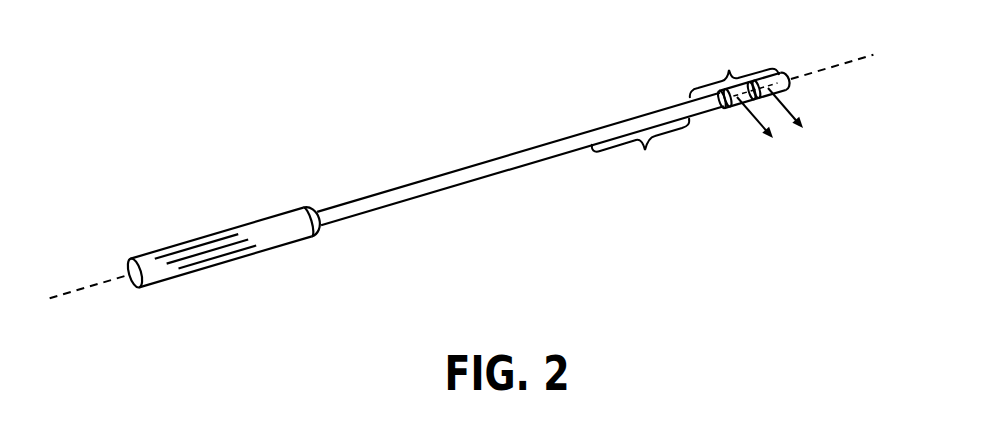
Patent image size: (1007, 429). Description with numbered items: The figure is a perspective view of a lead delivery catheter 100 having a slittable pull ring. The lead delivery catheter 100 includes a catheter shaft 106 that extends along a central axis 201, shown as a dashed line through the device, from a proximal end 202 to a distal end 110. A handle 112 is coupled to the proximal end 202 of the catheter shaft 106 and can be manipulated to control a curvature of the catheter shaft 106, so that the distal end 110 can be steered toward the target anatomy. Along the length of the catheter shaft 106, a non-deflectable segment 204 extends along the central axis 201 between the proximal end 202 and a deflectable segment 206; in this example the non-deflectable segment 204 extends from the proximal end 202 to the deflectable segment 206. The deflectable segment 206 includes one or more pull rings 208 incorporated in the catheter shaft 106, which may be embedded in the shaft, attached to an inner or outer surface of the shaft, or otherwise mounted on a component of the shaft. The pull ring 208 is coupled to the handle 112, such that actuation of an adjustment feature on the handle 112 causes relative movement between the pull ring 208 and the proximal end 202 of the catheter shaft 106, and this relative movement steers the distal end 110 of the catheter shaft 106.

The lead delivery catheter 100 is at (472, 110).
The catheter shaft 106 is at (478, 180).
The distal end 110 is at (790, 79).
The handle 112 is at (177, 279).
The central axis 201 is at (100, 284).
The proximal end 202 is at (319, 228).
The non-deflectable segment 204 is at (640, 151).
The deflectable segment 206 is at (734, 69).
The pull ring 208 is at (740, 103).